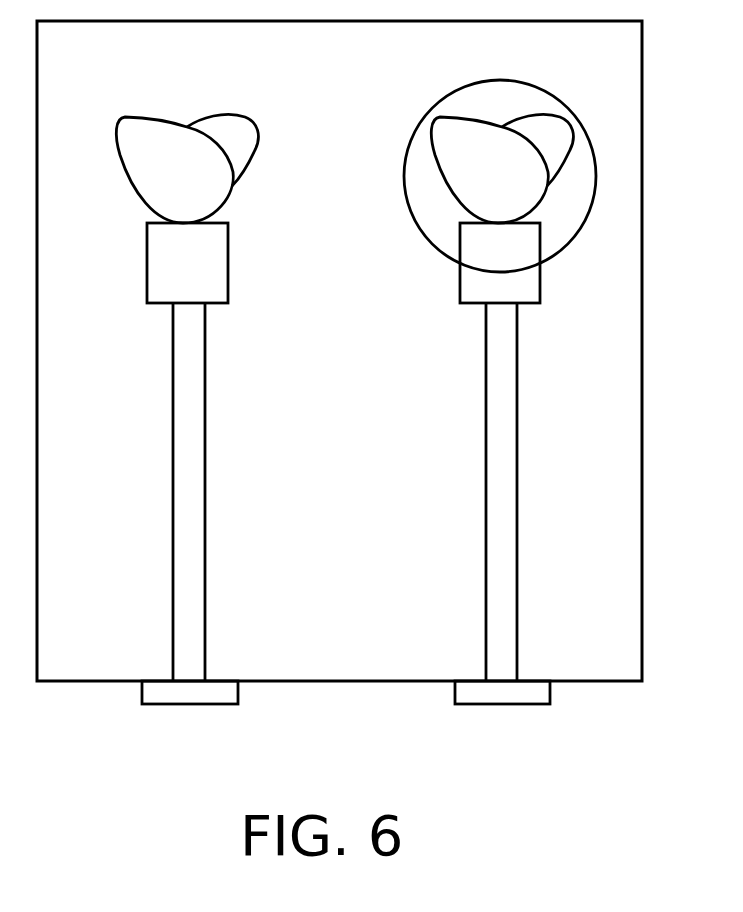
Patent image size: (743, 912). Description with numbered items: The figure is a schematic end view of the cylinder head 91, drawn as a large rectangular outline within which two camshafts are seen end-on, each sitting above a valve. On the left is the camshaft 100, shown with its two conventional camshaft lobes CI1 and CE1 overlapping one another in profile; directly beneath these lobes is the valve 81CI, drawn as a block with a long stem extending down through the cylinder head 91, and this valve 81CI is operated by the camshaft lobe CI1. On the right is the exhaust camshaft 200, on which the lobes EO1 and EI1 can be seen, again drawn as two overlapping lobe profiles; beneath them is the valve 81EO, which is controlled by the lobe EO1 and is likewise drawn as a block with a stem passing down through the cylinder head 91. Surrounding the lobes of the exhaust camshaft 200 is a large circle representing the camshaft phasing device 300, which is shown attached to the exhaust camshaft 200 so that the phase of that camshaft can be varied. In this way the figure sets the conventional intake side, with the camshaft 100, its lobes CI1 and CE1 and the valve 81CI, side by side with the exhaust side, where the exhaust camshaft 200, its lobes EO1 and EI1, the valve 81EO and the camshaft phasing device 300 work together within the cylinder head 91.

The cylinder head 91 is at (650, 538).
The camshaft 100 is at (187, 153).
The camshaft lobe CI1 is at (125, 115).
The camshaft lobe CE1 is at (257, 123).
The valve 81CI is at (172, 493).
The exhaust camshaft 200 is at (474, 152).
The lobe EO1 is at (432, 123).
The lobe EI1 is at (560, 118).
The camshaft phasing device 300 is at (553, 233).
The valve 81EO is at (485, 492).